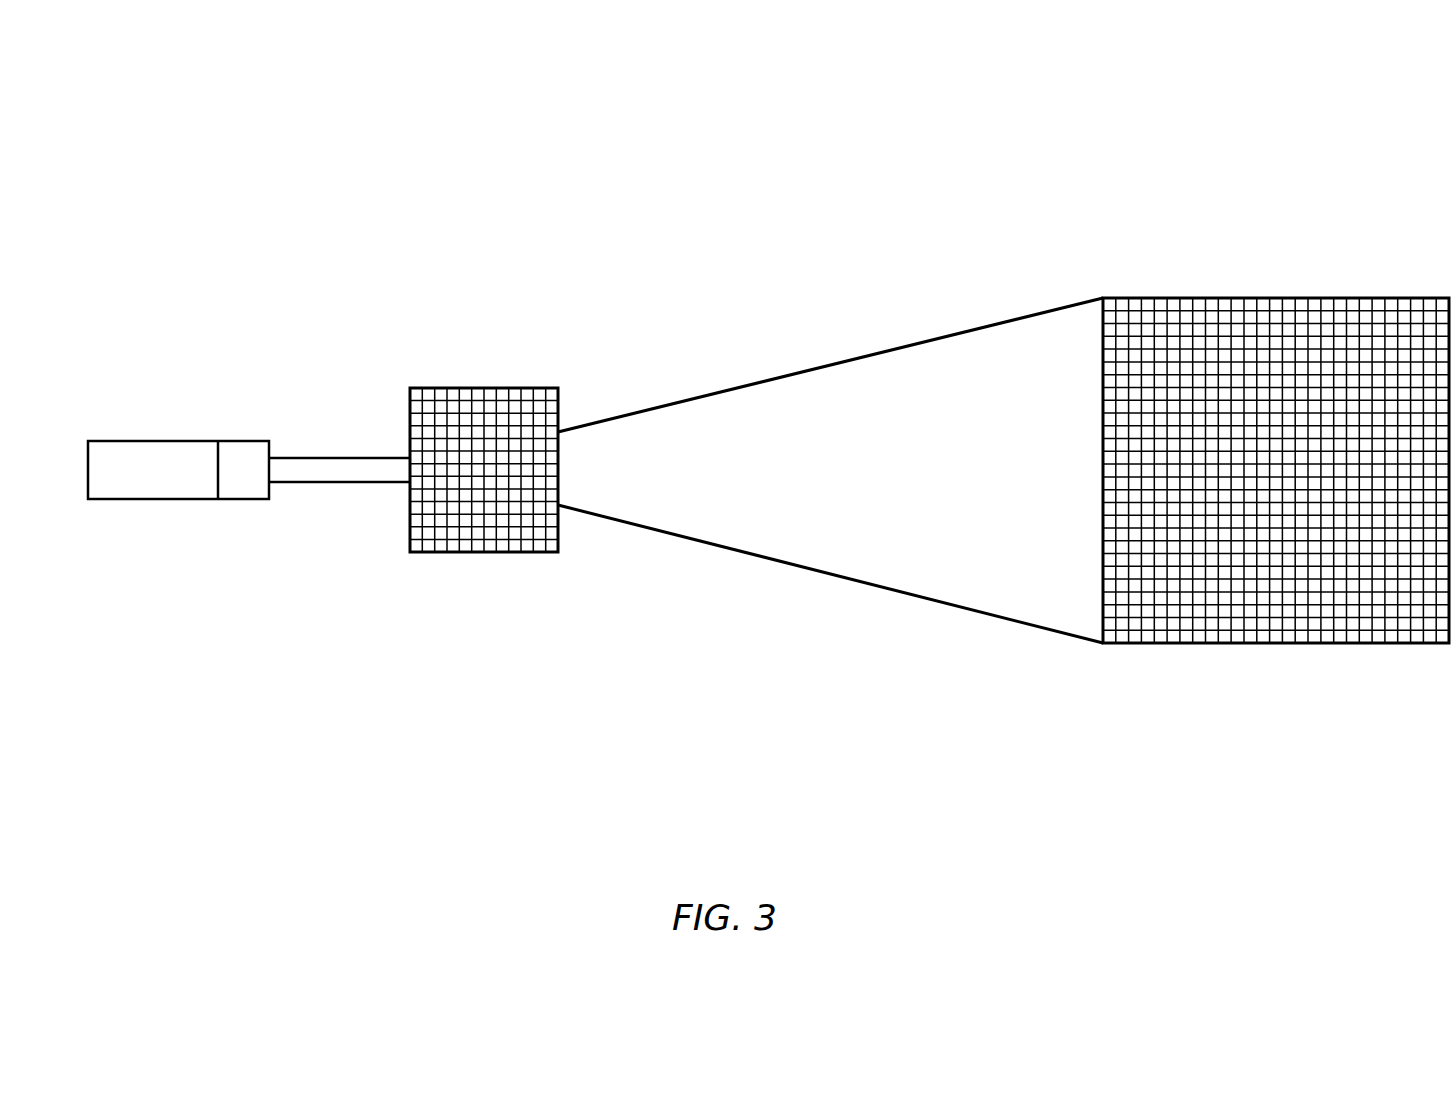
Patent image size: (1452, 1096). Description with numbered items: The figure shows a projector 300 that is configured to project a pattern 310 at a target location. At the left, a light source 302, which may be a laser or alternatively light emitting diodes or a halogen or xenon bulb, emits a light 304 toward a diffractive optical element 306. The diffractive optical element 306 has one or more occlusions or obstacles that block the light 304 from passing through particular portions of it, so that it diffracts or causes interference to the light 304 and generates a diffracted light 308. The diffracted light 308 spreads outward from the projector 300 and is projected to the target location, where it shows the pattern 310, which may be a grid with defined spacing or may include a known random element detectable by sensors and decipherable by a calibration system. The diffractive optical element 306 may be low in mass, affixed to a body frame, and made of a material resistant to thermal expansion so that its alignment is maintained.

The projector 300 is at (180, 124).
The light source 302 is at (185, 511).
The light 304 is at (336, 504).
The diffractive optical element 306 is at (486, 566).
The diffracted light 308 is at (823, 596).
The pattern 310 is at (1288, 660).